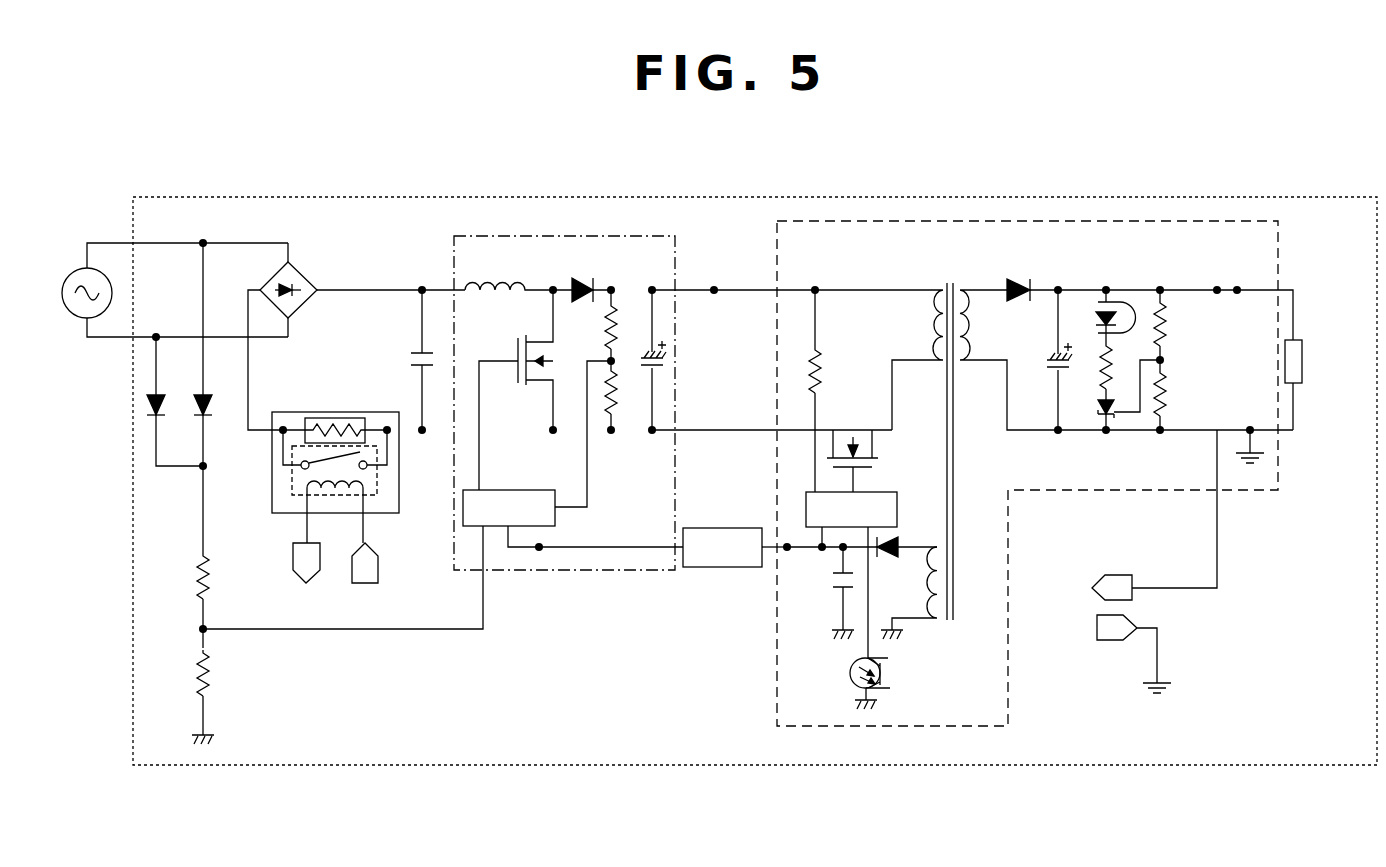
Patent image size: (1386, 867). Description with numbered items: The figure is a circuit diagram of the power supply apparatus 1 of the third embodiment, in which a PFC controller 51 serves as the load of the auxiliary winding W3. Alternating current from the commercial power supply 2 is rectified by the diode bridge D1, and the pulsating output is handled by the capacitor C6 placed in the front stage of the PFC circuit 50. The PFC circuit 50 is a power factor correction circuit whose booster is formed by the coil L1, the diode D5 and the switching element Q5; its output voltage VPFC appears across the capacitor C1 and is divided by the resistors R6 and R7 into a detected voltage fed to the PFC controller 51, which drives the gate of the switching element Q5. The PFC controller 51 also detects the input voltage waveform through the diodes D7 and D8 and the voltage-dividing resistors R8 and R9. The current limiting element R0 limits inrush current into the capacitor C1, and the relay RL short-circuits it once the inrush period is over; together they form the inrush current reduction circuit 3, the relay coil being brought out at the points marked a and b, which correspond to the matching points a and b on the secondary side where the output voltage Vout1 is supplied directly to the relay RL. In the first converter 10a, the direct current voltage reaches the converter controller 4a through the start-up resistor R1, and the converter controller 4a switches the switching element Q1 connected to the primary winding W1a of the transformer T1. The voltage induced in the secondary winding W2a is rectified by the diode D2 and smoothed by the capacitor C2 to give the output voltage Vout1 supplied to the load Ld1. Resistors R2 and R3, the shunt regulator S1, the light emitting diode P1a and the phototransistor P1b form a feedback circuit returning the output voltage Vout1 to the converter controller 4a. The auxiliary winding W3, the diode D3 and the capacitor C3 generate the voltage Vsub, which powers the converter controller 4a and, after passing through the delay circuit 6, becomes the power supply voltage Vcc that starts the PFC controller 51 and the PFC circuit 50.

The power supply apparatus 1 is at (873, 197).
The commercial power supply 2 is at (68, 268).
The inrush current reduction circuit 3 is at (397, 513).
The converter controller 4a is at (890, 505).
The delay circuit 6 is at (718, 567).
The first converter 10a is at (1280, 268).
The PFC circuit 50 is at (675, 328).
The PFC controller 51 is at (495, 520).
The diode bridge D1 is at (356, 336).
The diode D2 is at (1020, 284).
The diode D3 is at (862, 563).
The diode D5 is at (582, 279).
The diode D7 is at (175, 401).
The diode D8 is at (215, 398).
The capacitor C1 is at (667, 360).
The capacitor C2 is at (1044, 360).
The capacitor C3 is at (828, 593).
The capacitor C6 is at (410, 360).
The coil L1 is at (509, 270).
The switching element Q1 is at (852, 450).
The switching element Q5 is at (516, 390).
The current limiting element R0 is at (335, 418).
The start-up resistor R1 is at (832, 391).
The resistor R2 is at (1176, 330).
The resistor R3 is at (1176, 400).
The resistor R6 is at (628, 325).
The resistor R7 is at (628, 395).
The resistor R8 is at (220, 600).
The resistor R9 is at (217, 697).
The relay RL is at (292, 478).
The shunt regulator S1 is at (1116, 395).
The transformer T1 is at (950, 283).
The primary winding W1a is at (926, 289).
The secondary winding W2a is at (972, 289).
The auxiliary winding W3 is at (935, 620).
The light emitting diode P1a is at (1118, 300).
The phototransistor P1b is at (856, 667).
The load Ld1 is at (1302, 357).
The output voltage of the PFC circuit VPFC is at (715, 288).
The voltage Vsub is at (786, 543).
The power supply voltage Vcc is at (540, 552).
The output voltage Vout1 is at (1237, 288).
The relay control terminal a is at (742, 571).
The relay control terminal b is at (732, 618).